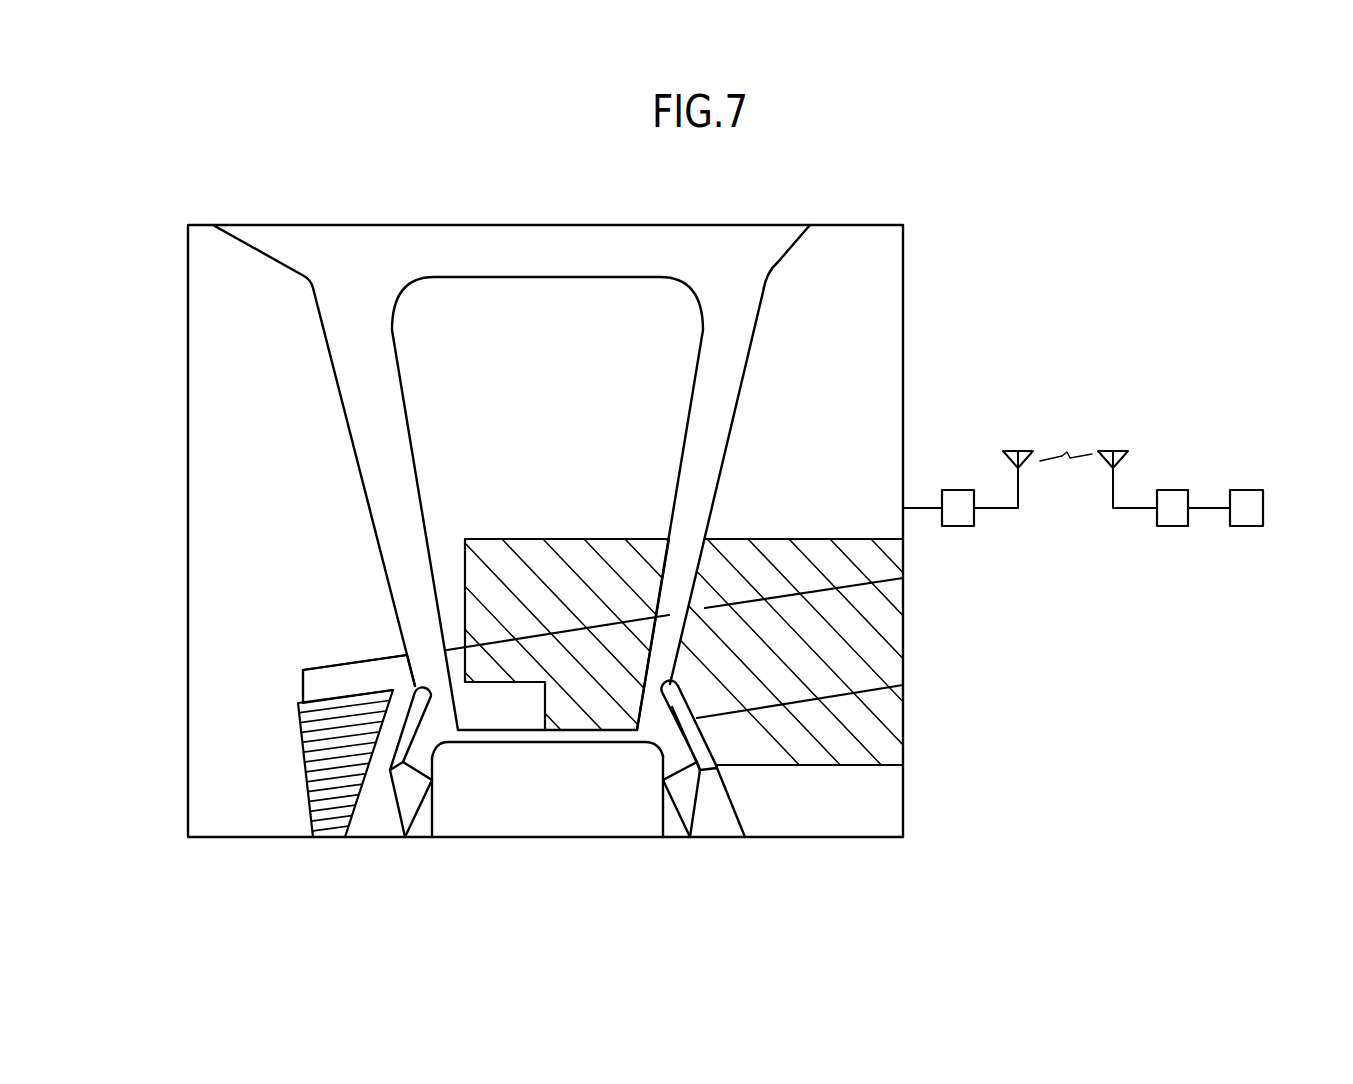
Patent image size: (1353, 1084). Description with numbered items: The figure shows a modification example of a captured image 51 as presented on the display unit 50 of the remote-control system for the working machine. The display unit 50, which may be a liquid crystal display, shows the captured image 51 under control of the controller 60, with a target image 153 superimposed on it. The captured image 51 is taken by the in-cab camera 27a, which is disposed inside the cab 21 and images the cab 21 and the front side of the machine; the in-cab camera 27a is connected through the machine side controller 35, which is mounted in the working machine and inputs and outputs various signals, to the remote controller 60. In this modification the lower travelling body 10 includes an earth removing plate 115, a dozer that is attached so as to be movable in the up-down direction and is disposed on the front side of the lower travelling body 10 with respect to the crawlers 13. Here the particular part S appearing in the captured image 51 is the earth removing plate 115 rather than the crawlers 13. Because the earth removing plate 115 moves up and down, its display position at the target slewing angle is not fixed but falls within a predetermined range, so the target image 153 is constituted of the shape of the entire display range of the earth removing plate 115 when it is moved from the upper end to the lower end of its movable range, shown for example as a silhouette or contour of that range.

The display unit 50 is at (177, 207).
The captured image 51 is at (198, 549).
The lower travelling body 10 is at (310, 653).
The earth removing plate 115 is at (312, 685).
The crawlers 13 is at (312, 743).
The cab 21 is at (545, 810).
The target image 153 is at (802, 753).
The controller 60 is at (963, 490).
The machine side controller 35 is at (1171, 490).
The in-cab camera 27a is at (1250, 490).